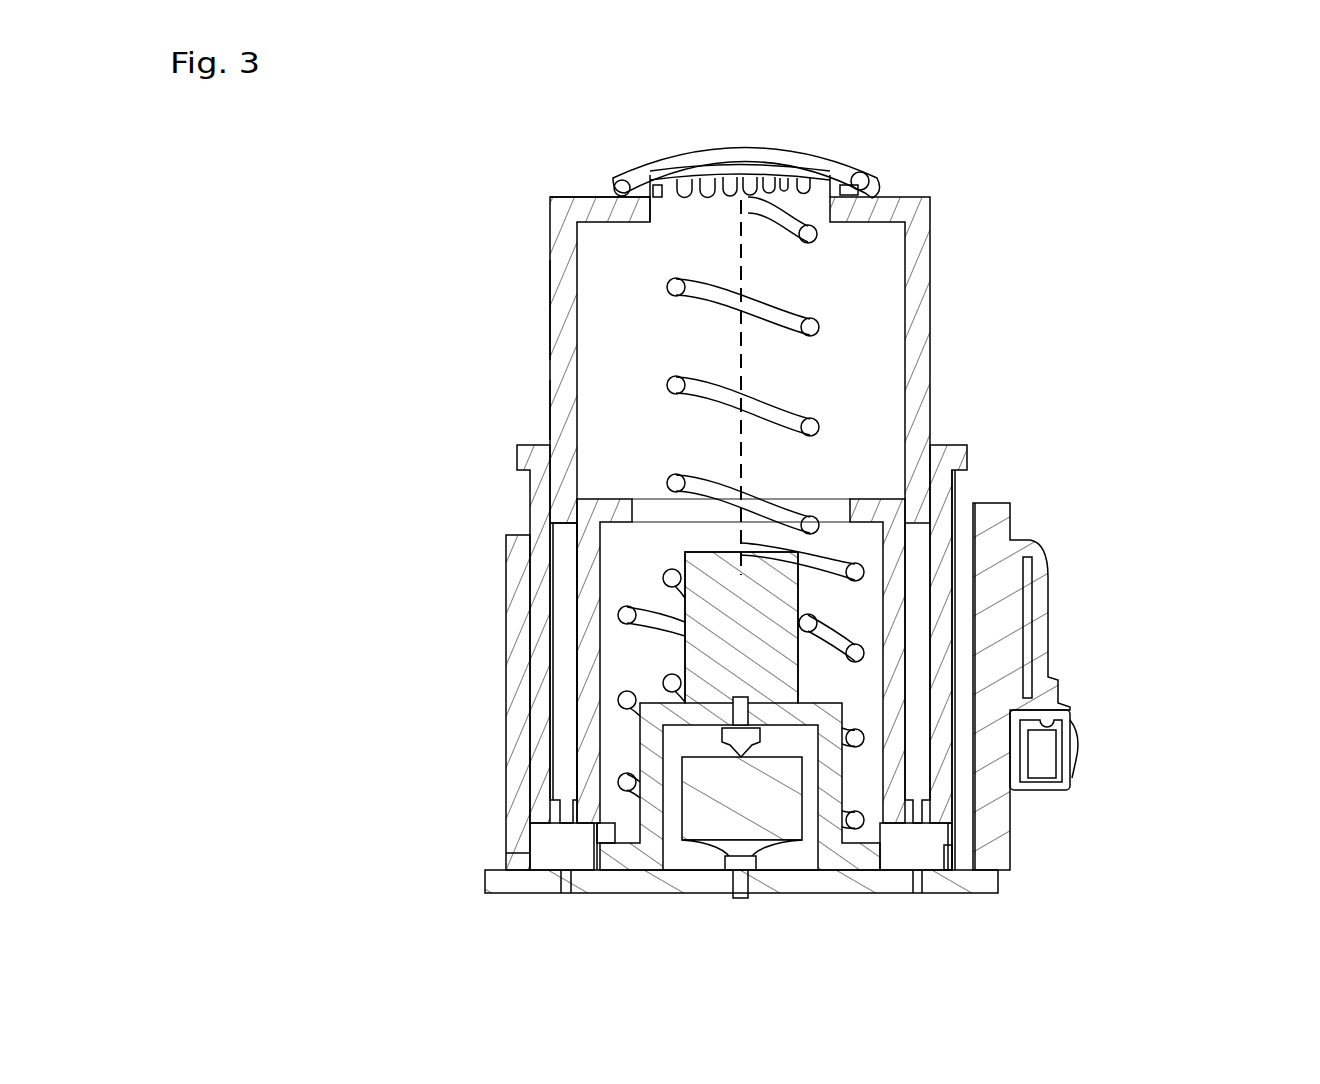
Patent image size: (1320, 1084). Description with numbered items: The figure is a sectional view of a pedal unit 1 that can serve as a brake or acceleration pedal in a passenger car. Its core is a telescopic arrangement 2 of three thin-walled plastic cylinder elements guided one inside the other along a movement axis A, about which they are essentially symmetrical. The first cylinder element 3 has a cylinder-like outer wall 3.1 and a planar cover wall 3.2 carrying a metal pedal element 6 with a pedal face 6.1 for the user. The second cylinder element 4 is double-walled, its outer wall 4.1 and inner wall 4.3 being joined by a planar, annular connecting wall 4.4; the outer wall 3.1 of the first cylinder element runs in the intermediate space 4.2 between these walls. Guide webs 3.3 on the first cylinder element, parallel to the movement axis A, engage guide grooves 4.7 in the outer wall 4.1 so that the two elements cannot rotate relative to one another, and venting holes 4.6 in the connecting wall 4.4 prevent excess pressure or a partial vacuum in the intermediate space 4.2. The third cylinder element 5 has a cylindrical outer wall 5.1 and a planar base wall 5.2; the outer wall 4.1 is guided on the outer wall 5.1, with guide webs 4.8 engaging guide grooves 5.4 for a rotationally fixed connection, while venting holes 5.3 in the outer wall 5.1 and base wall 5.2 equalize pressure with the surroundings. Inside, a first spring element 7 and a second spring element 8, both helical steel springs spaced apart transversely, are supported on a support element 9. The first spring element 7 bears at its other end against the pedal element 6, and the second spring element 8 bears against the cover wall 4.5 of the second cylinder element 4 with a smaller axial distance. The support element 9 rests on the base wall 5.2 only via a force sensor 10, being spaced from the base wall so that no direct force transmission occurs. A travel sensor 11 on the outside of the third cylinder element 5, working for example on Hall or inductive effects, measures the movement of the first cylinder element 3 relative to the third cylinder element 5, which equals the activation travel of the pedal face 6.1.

The pedal unit 1 is at (1095, 172).
The telescopic arrangement 2 is at (1022, 367).
The first cylinder element 3 is at (925, 300).
The outer wall 3.1 is at (549, 310).
The cover wall 3.2 is at (588, 192).
The guide webs 3.3 is at (549, 405).
The second cylinder element 4 is at (941, 603).
The outer wall 4.1 is at (525, 655).
The intermediate space 4.2 is at (561, 705).
The inner wall 4.3 is at (577, 770).
The connecting wall 4.4 is at (547, 830).
The cover wall 4.5 is at (866, 490).
The venting holes 4.6 is at (920, 828).
The guide grooves 4.7 is at (558, 545).
The guide webs 4.8 is at (966, 487).
The third cylinder element 5 is at (955, 770).
The outer wall 5.1 is at (976, 673).
The base wall 5.2 is at (705, 897).
The venting holes 5.3 is at (502, 857).
The guide grooves 5.4 is at (940, 858).
The pedal element 6 is at (862, 178).
The pedal face 6.1 is at (763, 143).
The first spring element 7 is at (708, 400).
The second spring element 8 is at (630, 612).
The support element 9 is at (754, 630).
The force sensor 10 is at (762, 815).
The travel sensor 11 is at (1050, 627).
The movement axis A is at (745, 345).